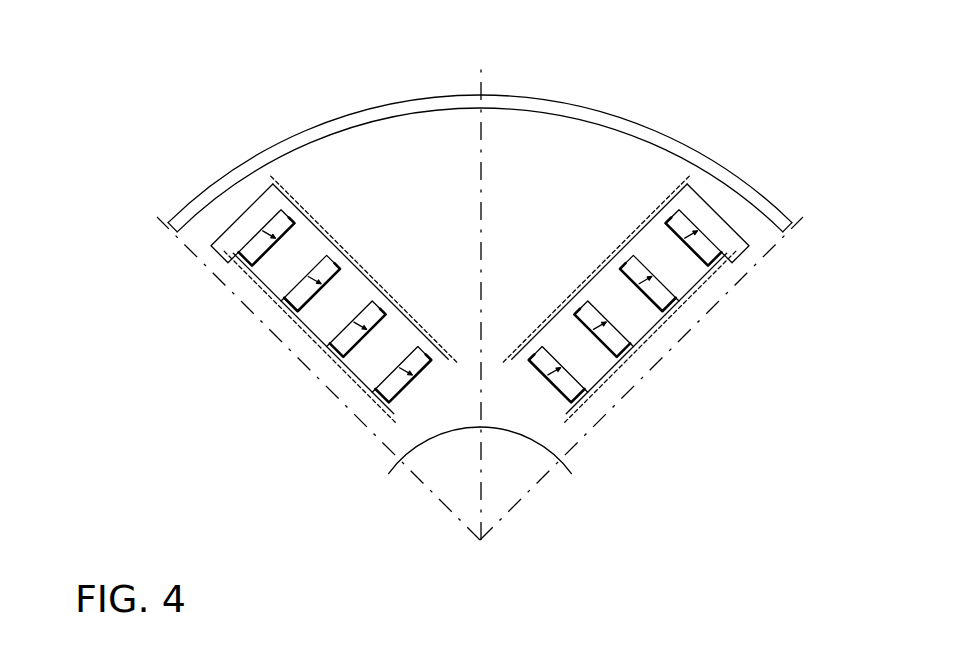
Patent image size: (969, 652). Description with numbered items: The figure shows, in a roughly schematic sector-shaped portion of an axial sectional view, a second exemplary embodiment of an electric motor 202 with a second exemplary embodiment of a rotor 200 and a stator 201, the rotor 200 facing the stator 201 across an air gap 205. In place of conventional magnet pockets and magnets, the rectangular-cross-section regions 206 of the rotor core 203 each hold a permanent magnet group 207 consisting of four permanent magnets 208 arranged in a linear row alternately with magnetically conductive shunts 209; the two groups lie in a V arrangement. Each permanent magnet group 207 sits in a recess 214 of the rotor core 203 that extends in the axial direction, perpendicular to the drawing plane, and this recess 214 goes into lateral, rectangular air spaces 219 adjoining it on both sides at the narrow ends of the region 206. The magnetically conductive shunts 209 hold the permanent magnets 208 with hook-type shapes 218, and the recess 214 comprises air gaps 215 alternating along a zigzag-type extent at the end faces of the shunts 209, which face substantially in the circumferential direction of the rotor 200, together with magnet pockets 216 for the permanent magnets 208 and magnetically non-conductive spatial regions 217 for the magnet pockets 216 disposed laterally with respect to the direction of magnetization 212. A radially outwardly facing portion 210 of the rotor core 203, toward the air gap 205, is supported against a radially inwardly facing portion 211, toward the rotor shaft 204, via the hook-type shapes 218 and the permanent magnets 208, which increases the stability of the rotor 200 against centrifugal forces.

The rotor 200 is at (702, 437).
The stator 201 is at (759, 81).
The electric motor 202 is at (227, 78).
The rotor core 203 is at (362, 158).
The rotor shaft 204 is at (520, 483).
The air gap 205 is at (530, 103).
The region 206 is at (322, 226).
The permanent magnet group 207 is at (221, 469).
The permanent magnet 208 is at (340, 340).
The magnetically conductive shunt 209 is at (363, 367).
The radially outwardly facing portion 210 is at (432, 133).
The radially inwardly facing portion 211 is at (443, 417).
The direction of magnetization 212 is at (697, 238).
The recess 214 is at (622, 362).
The air gap 215 is at (700, 288).
The magnet pocket 216 is at (247, 240).
The magnetically non-conductive spatial region 217 is at (676, 311).
The hook-type shape 218 is at (282, 302).
The air space 219 is at (257, 195).